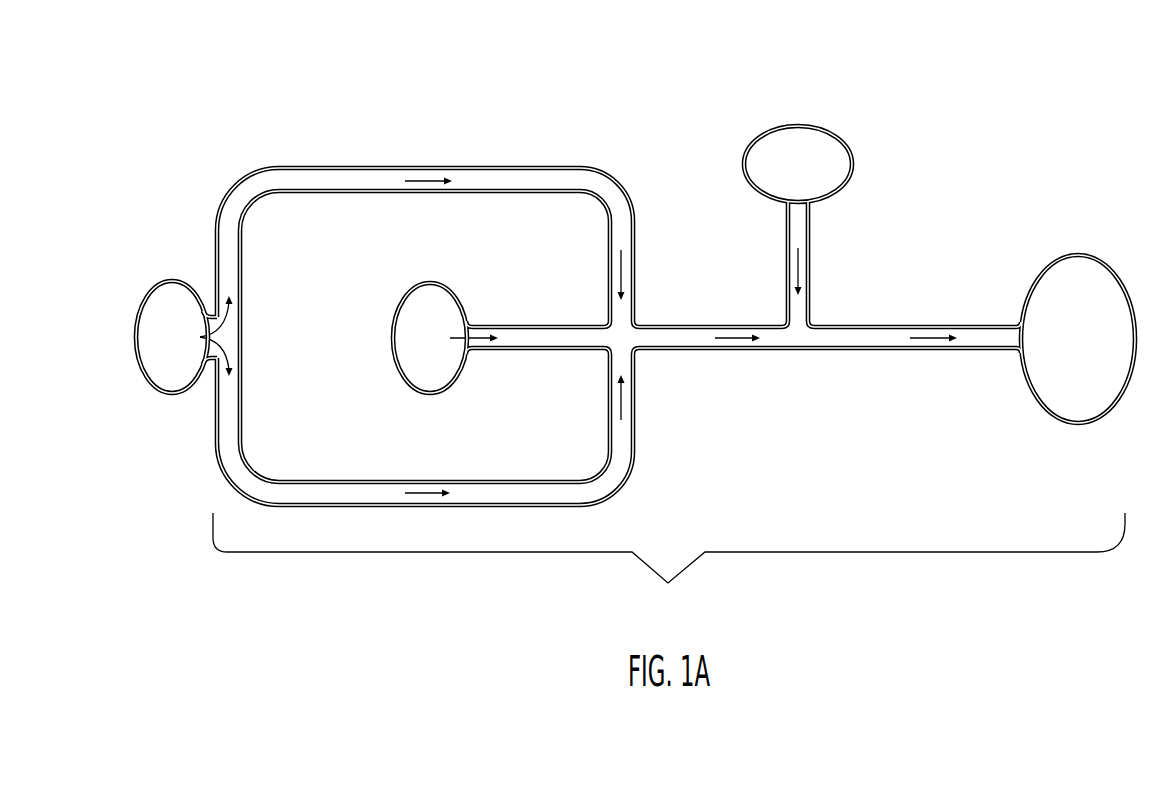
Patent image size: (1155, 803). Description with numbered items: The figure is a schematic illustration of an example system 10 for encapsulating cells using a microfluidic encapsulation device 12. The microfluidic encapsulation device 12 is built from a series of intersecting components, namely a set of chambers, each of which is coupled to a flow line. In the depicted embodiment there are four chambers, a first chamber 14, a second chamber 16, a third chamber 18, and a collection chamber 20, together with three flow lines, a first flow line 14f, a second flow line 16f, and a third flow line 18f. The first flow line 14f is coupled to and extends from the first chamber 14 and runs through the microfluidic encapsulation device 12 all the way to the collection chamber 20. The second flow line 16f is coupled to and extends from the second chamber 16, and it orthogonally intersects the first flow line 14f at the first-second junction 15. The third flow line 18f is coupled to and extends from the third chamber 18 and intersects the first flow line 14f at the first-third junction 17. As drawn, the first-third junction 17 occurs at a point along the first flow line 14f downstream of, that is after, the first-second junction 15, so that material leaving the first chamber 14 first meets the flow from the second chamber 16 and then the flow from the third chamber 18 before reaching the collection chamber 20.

The system 10 is at (347, 99).
The microfluidic encapsulation device 12 is at (669, 566).
The first chamber 14 is at (501, 338).
The first flow line 14f is at (793, 350).
The first-second junction 15 is at (618, 344).
The second chamber 16 is at (184, 337).
The second flow line 16f is at (430, 166).
The first-third junction 17 is at (797, 338).
The third chamber 18 is at (798, 164).
The third flow line 18f is at (788, 280).
The collection chamber 20 is at (1078, 339).